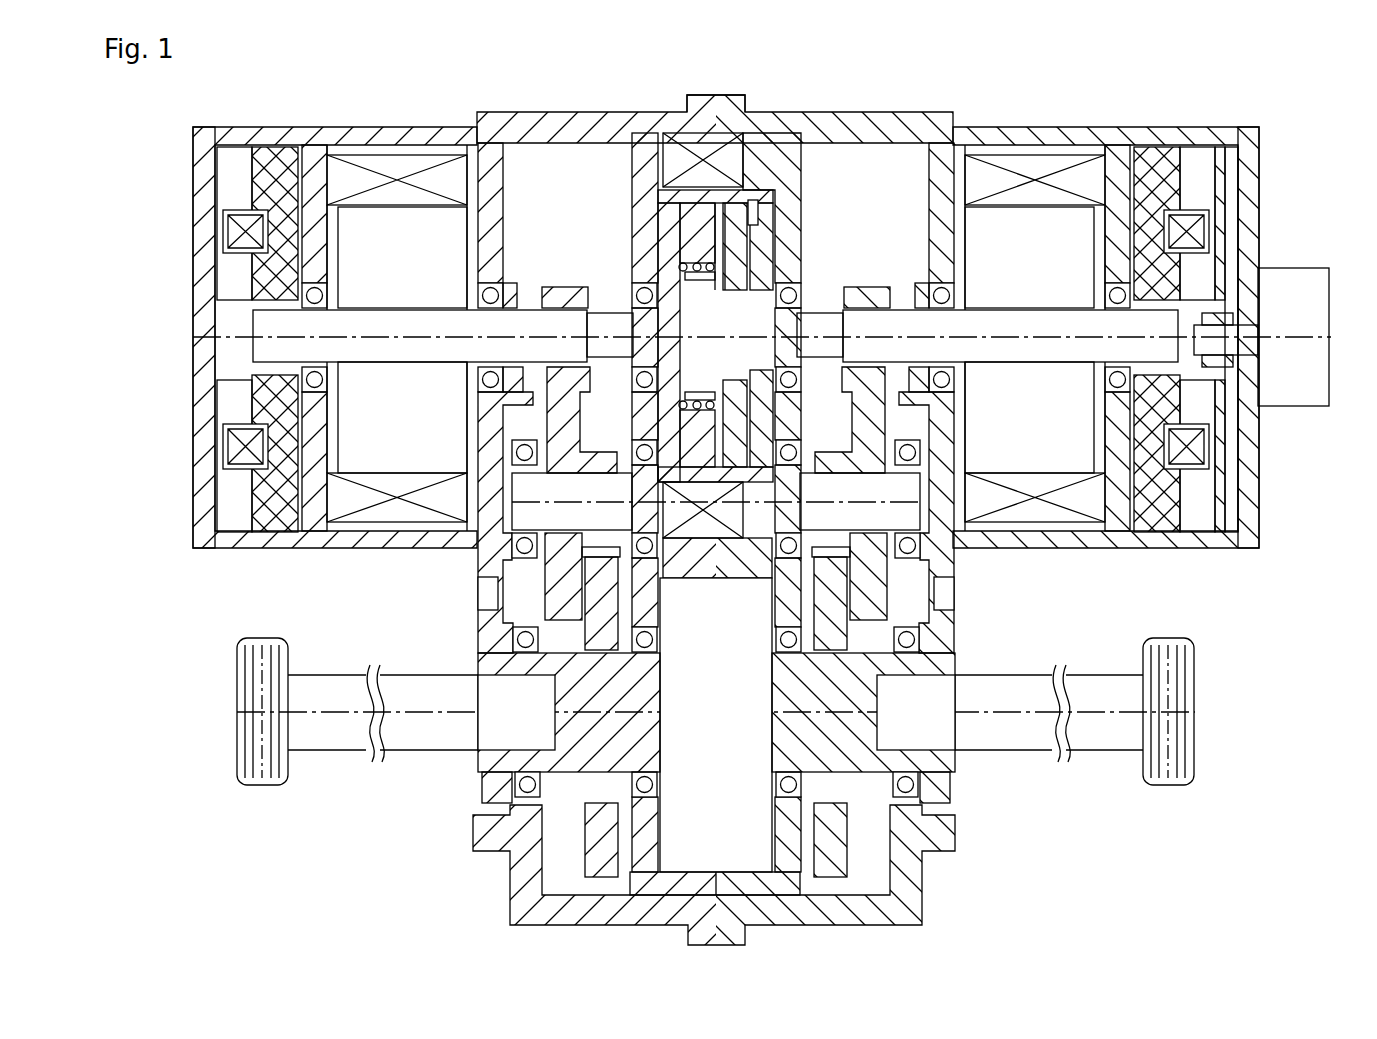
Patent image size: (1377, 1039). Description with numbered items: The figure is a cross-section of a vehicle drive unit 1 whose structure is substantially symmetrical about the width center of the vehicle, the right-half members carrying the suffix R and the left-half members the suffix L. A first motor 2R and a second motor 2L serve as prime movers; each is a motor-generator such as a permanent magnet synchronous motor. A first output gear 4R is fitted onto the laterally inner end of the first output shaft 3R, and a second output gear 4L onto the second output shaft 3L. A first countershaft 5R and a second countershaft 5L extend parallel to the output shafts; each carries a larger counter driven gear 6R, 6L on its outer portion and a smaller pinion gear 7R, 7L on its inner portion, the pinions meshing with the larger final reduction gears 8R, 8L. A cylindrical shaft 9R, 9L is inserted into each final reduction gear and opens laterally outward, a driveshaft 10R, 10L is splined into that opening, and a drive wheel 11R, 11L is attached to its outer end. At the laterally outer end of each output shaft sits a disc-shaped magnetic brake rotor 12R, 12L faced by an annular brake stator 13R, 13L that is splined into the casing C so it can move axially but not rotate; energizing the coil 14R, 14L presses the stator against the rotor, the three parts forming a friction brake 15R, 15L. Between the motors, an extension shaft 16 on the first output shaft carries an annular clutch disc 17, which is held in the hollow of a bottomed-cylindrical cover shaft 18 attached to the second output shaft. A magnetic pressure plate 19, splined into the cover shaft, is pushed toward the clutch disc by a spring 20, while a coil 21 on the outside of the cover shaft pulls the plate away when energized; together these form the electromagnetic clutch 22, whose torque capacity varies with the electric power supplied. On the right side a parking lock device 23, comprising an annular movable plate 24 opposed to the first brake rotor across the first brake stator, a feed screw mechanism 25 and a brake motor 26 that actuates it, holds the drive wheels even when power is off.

The drive unit 1 is at (355, 856).
The second motor 2L is at (399, 114).
The first motor 2R is at (1036, 118).
The second output shaft 3L is at (405, 312).
The first output shaft 3R is at (1030, 312).
The second output gear 4L is at (566, 300).
The first output gear 4R is at (862, 300).
The second countershaft 5L is at (507, 516).
The first countershaft 5R is at (926, 556).
The second counter driven gear 6L is at (553, 583).
The first counter driven gear 6R is at (880, 583).
The second pinion gear 7L is at (608, 452).
The first pinion gear 7R is at (840, 452).
The second final reduction gear 8L is at (595, 836).
The first final reduction gear 8R is at (836, 836).
The second cylindrical shaft 9L is at (480, 771).
The first cylindrical shaft 9R is at (955, 772).
The second driveshaft 10L is at (426, 684).
The first driveshaft 10R is at (1016, 684).
The second drive wheel 11L is at (263, 650).
The first drive wheel 11R is at (1170, 650).
The second brake rotor 12L is at (280, 156).
The first brake rotor 12R is at (1152, 147).
The second brake stator 13L is at (238, 156).
The first brake stator 13R is at (1198, 156).
The second coil 14L is at (229, 233).
The first coil 14R is at (1208, 233).
The second friction brake 15L is at (191, 313).
The first friction brake 15R is at (1258, 128).
The extension shaft 16 is at (776, 290).
The clutch disc 17 is at (776, 232).
The cover shaft 18 is at (666, 216).
The pressure plate 19 is at (716, 272).
The spring 20 is at (696, 396).
The coil 21 is at (687, 135).
The electromagnetic clutch 22 is at (822, 168).
The casing C is at (838, 126).
The parking lock device 23 is at (1270, 448).
The movable plate 24 is at (1226, 510).
The feed screw mechanism 25 is at (1212, 320).
The brake motor 26 is at (1320, 308).